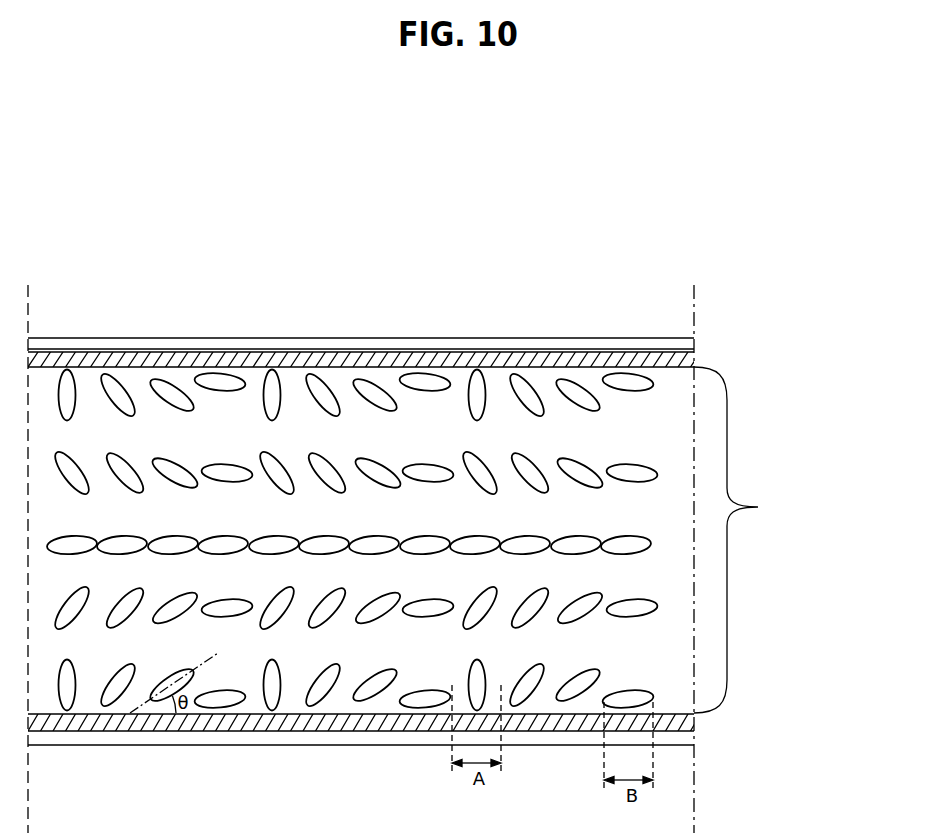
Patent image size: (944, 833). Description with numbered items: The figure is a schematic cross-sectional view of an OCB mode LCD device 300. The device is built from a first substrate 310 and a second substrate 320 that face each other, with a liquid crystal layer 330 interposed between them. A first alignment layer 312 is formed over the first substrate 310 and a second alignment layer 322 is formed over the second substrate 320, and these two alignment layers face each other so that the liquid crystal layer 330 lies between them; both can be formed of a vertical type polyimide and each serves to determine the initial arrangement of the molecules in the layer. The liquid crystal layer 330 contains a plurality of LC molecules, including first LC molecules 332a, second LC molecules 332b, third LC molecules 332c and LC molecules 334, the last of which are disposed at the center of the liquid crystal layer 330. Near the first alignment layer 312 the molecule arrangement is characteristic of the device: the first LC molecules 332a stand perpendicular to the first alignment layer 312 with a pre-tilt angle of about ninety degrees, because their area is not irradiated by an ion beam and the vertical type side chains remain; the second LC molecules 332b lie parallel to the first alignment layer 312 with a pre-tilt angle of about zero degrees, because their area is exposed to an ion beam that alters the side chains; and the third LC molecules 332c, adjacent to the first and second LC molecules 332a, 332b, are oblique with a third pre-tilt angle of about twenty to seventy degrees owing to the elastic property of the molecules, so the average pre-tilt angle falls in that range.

The OCB mode LCD device 300 is at (545, 257).
The first substrate 310 is at (673, 734).
The first alignment layer 312 is at (673, 722).
The second substrate 320 is at (672, 342).
The second alignment layer 322 is at (672, 360).
The liquid crystal layer 330 is at (424, 540).
The first LC molecules 332a is at (69, 697).
The second LC molecules 332b is at (220, 702).
The third LC molecules 332c is at (175, 676).
The LC molecules at center of LC layer 334 is at (373, 533).